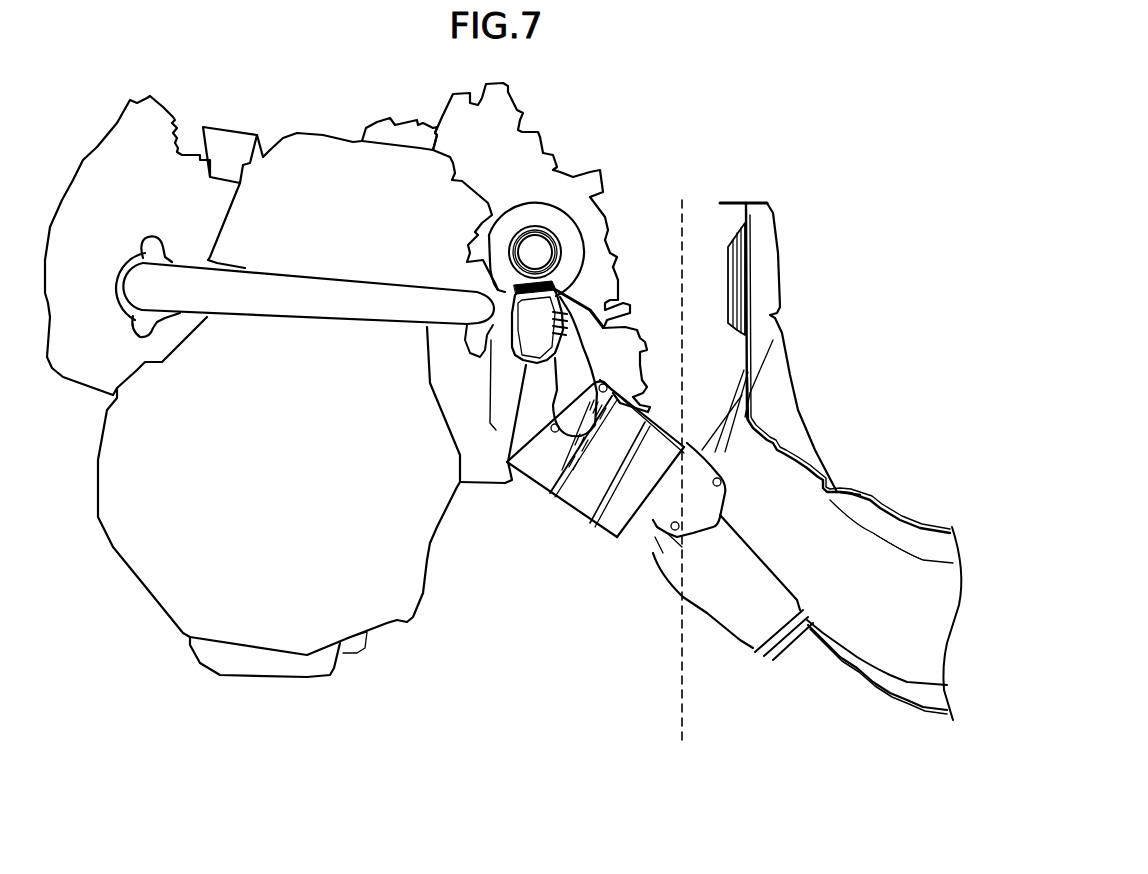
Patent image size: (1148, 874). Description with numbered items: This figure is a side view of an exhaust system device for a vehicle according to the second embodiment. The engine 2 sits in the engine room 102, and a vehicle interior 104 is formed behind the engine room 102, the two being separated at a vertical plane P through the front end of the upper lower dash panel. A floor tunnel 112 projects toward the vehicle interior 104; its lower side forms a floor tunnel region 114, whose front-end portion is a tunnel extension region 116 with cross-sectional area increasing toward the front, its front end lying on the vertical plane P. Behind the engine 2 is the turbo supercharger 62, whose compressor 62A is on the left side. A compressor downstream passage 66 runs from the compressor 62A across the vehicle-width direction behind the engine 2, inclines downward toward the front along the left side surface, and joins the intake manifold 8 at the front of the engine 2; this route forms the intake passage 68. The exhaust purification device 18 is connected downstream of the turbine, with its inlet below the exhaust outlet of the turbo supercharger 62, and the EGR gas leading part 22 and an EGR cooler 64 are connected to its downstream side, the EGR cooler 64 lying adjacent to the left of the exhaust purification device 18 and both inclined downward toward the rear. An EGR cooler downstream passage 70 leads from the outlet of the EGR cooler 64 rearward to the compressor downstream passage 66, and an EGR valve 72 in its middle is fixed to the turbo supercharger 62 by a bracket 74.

The engine 2 is at (397, 575).
The intake manifold 8 is at (98, 180).
The exhaust purification device 18 is at (650, 408).
The EGR gas leading part 22 is at (742, 572).
The turbo supercharger 62 is at (542, 225).
The compressor 62A is at (580, 243).
The EGR cooler 64 is at (623, 453).
The compressor downstream passage 66 is at (252, 300).
The intake passage 68 is at (323, 340).
The EGR cooler downstream passage 70 is at (573, 410).
The EGR valve 72 is at (530, 345).
The bracket 74 is at (560, 288).
The vertical plane P is at (677, 260).
The engine room 102 is at (612, 680).
The vehicle interior 104 is at (929, 403).
The floor tunnel 112 is at (883, 500).
The floor tunnel region 114 is at (910, 558).
The tunnel extension region 116 is at (790, 466).